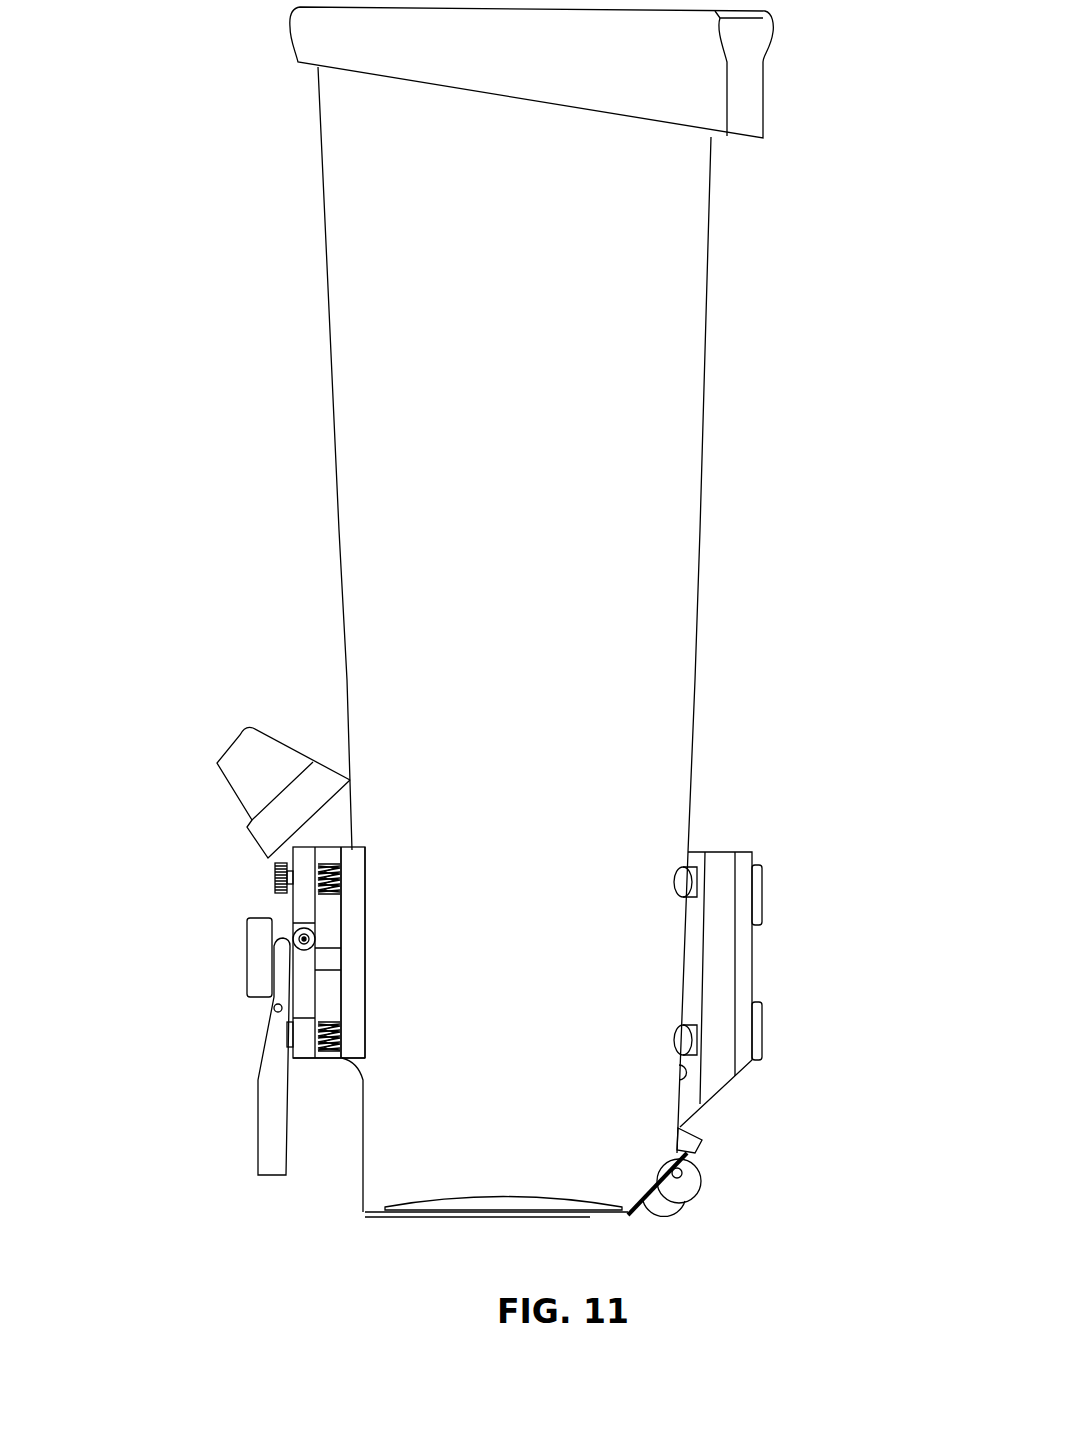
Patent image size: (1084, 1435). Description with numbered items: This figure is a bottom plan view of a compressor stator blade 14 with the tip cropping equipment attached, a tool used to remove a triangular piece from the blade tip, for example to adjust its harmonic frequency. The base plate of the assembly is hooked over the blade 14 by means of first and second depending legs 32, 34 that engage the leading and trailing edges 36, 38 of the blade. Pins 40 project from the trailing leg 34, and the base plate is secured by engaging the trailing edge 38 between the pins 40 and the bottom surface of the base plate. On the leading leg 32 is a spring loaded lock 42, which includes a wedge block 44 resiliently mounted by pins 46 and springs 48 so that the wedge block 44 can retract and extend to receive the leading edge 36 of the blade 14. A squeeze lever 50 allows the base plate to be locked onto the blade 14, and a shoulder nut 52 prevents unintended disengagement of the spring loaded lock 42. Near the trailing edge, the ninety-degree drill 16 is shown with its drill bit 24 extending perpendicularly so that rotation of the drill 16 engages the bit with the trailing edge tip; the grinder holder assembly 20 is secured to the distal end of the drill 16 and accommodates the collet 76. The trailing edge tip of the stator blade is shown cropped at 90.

The compressor stator blade 14 is at (730, 403).
The 90° drill 16 is at (265, 830).
The grinder holder assembly 20 is at (690, 1143).
The drill bit 24 is at (688, 1198).
The leading leg 32 is at (335, 1082).
The trailing leg 34 is at (740, 835).
The leading edge 36 is at (340, 551).
The trailing edge 38 is at (699, 598).
The pins 40 is at (665, 886).
The spring loaded lock 42 is at (386, 834).
The wedge block 44 is at (353, 972).
The pins 46 is at (340, 866).
The springs 48 is at (340, 880).
The squeeze lever 50 is at (270, 1120).
The shoulder nut 52 is at (240, 960).
The collet 76 is at (662, 1210).
The cropped trailing edge tip 90 is at (640, 1197).